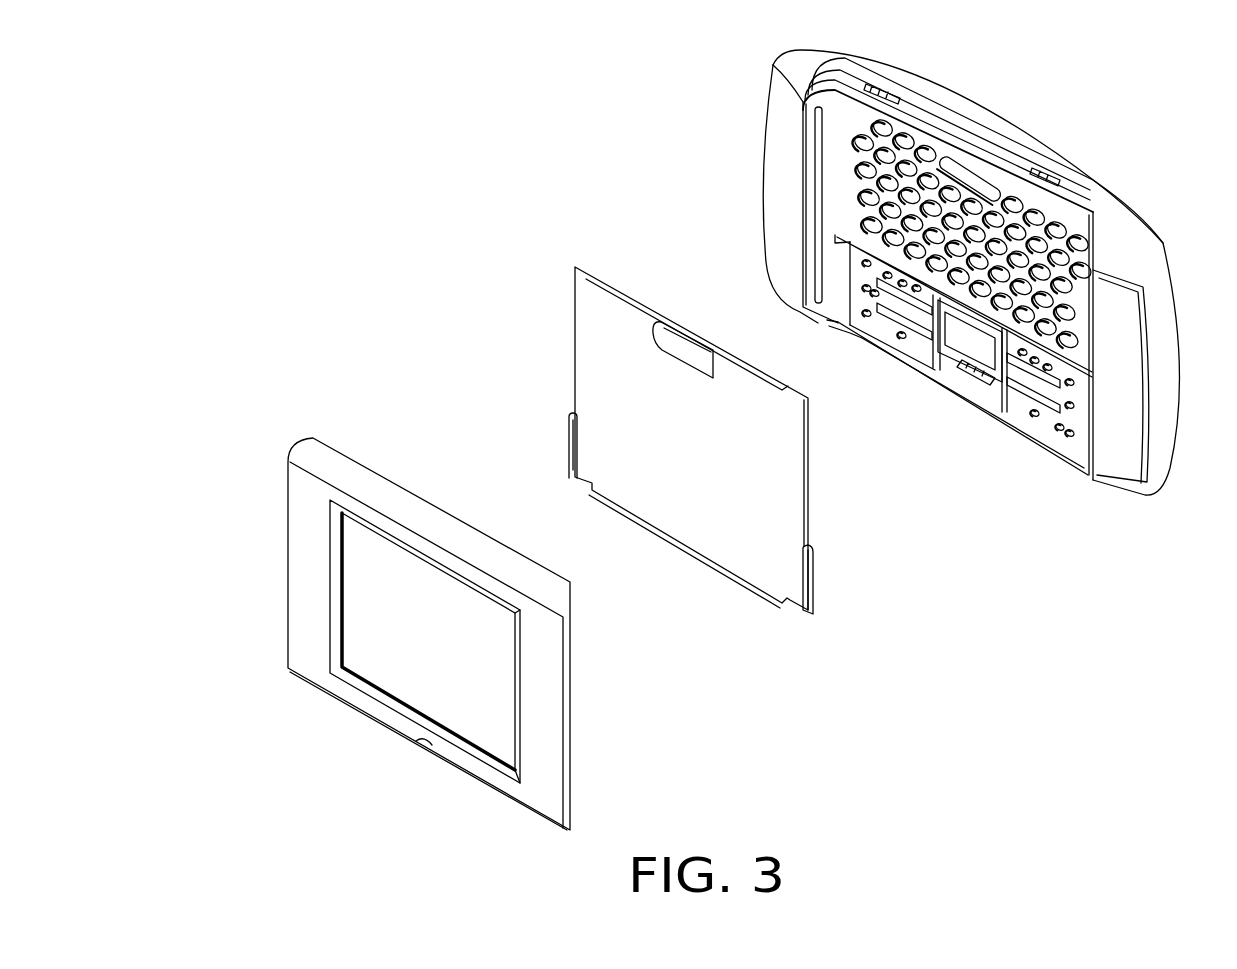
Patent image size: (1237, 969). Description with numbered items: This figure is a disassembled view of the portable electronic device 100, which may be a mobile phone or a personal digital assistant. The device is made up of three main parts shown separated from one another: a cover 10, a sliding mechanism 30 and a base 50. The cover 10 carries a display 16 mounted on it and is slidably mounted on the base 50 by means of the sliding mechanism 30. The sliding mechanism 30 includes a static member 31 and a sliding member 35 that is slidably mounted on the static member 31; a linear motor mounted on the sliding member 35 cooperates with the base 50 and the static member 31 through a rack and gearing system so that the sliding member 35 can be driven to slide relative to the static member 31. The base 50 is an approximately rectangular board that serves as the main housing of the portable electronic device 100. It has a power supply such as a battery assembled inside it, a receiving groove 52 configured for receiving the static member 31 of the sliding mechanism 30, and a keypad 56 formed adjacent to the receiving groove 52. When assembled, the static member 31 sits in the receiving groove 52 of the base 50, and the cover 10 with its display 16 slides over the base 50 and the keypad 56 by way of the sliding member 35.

The portable electronic device 100 is at (587, 60).
The cover 10 is at (310, 511).
The display 16 is at (370, 548).
The sliding mechanism 30 is at (548, 260).
The sliding member 35 is at (597, 363).
The static member 31 is at (813, 570).
The base 50 is at (843, 66).
The keypad 56 is at (973, 217).
The receiving groove 52 is at (1027, 380).